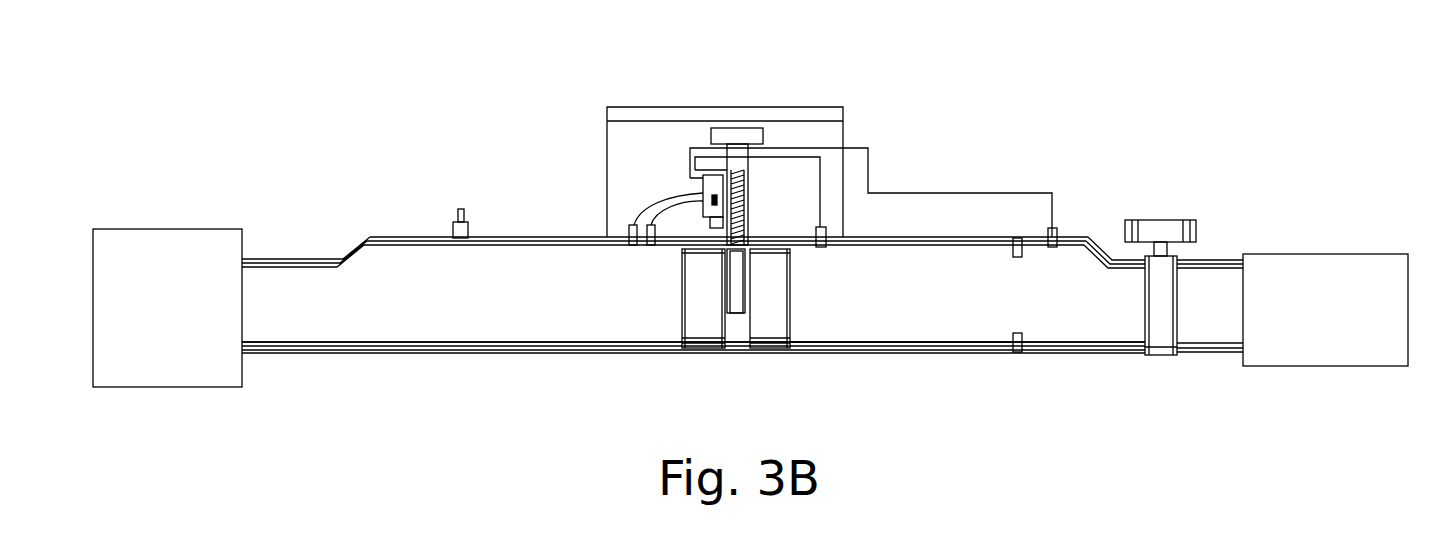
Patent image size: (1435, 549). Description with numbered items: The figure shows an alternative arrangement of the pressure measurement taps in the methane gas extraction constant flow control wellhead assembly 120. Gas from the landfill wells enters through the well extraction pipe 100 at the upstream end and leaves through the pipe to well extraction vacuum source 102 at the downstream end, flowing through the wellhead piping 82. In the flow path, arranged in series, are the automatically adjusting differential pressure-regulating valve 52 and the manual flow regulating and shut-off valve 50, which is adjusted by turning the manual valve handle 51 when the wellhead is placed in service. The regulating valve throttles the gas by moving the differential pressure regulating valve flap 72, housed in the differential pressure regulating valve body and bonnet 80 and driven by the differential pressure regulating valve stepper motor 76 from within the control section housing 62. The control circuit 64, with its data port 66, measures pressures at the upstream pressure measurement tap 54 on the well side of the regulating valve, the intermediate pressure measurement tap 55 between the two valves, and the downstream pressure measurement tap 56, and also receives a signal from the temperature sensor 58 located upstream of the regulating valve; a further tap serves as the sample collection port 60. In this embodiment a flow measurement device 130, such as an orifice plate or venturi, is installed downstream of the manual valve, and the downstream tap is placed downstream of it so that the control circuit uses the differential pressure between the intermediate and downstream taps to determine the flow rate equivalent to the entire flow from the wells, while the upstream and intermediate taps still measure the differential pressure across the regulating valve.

The manual flow regulating and shut-off valve 50 is at (1165, 262).
The manual valve handle 51 is at (1168, 230).
The differential pressure-regulating valve 52 is at (700, 308).
The upstream pressure measurement tap 54 is at (627, 227).
The intermediate pressure measurement tap 55 is at (824, 228).
The downstream pressure measurement tap 56 is at (1054, 228).
The temperature sensor 58 is at (628, 230).
The sample collection port 60 is at (457, 212).
The control section housing 62 is at (703, 107).
The control circuit 64 is at (715, 185).
The data port 66 is at (717, 218).
The differential pressure regulating valve flap 72 is at (737, 300).
The differential pressure regulating valve stepper motor 76 is at (747, 135).
The differential pressure regulating valve body and bonnet 80 is at (785, 347).
The wellhead piping 82 is at (456, 354).
The well extraction pipe 100 is at (193, 247).
The pipe to well extraction vacuum source 102 is at (1313, 268).
The methane gas extraction constant flow control wellhead assembly 120 is at (918, 317).
The flow measurement device 130 is at (1022, 257).